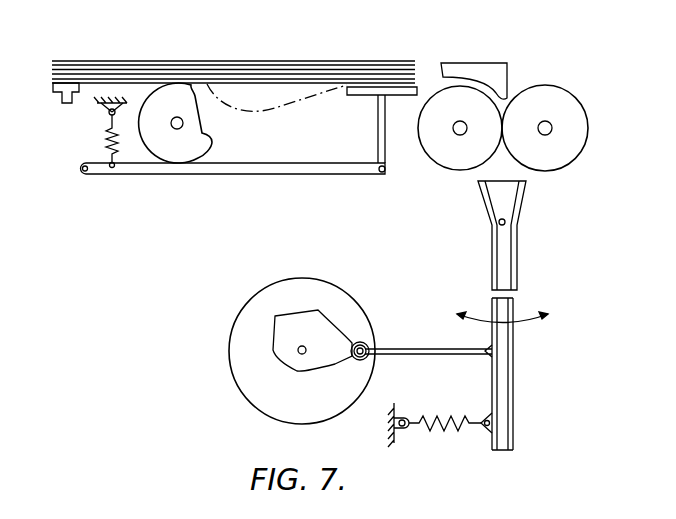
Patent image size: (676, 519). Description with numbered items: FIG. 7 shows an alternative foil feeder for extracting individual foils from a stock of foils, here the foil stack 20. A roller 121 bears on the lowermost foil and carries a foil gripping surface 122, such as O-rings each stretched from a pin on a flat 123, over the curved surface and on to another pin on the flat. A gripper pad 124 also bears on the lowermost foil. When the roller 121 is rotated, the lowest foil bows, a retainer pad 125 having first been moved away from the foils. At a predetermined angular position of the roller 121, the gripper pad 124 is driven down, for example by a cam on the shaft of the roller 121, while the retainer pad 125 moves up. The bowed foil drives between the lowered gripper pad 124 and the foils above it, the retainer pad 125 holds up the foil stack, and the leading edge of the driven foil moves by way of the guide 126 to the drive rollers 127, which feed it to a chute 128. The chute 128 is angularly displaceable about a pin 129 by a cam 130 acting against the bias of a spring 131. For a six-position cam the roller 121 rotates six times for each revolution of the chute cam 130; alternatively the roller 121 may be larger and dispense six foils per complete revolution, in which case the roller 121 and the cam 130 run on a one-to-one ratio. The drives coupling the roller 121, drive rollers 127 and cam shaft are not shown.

The strip 20 is at (152, 68).
The roller 121 is at (173, 145).
The foil gripping surface 122 is at (146, 147).
The flat 123 is at (203, 133).
The gripper pad 124 is at (383, 90).
The retainer pad 125 is at (54, 86).
The guide 126 is at (501, 80).
The drive rollers 127 is at (553, 160).
The chute 128 is at (516, 217).
The pin 129 is at (498, 228).
The cam 130 is at (362, 336).
The spring 131 is at (437, 432).